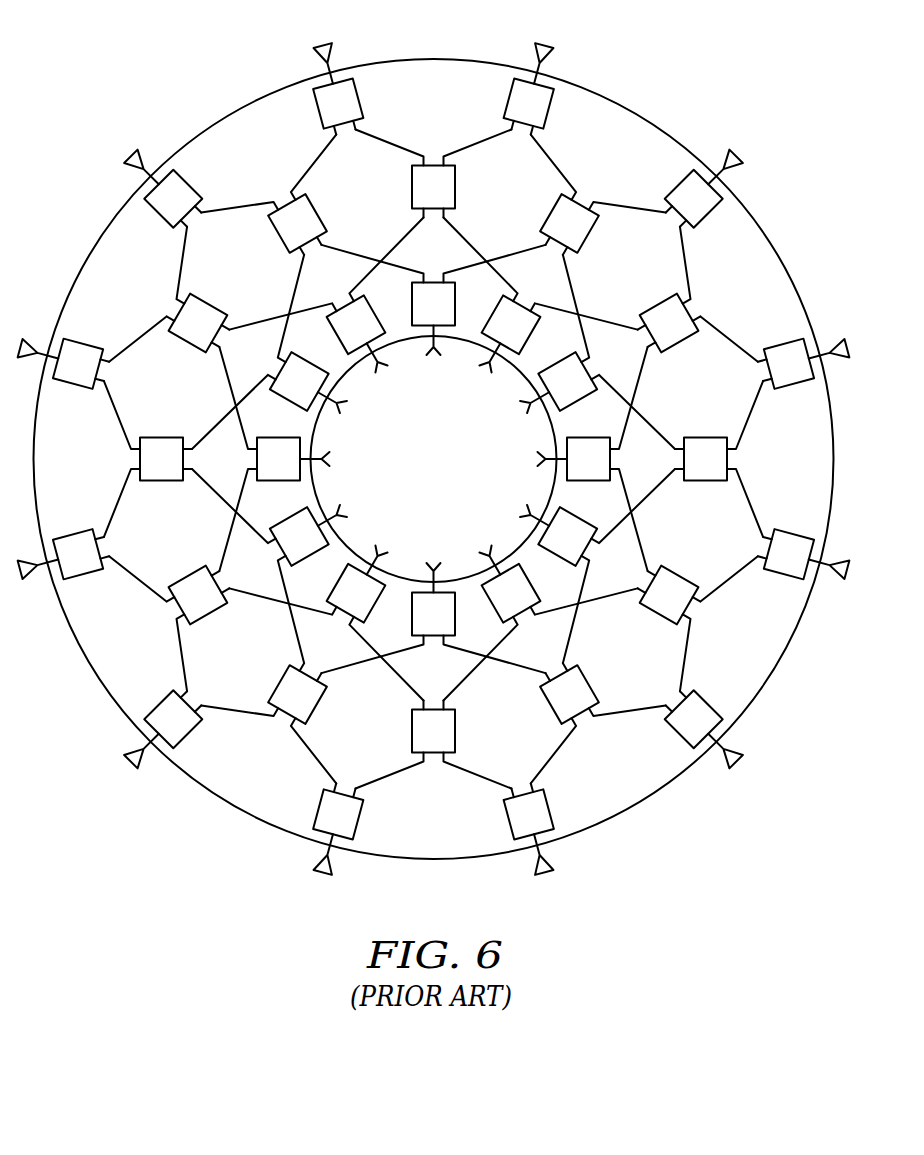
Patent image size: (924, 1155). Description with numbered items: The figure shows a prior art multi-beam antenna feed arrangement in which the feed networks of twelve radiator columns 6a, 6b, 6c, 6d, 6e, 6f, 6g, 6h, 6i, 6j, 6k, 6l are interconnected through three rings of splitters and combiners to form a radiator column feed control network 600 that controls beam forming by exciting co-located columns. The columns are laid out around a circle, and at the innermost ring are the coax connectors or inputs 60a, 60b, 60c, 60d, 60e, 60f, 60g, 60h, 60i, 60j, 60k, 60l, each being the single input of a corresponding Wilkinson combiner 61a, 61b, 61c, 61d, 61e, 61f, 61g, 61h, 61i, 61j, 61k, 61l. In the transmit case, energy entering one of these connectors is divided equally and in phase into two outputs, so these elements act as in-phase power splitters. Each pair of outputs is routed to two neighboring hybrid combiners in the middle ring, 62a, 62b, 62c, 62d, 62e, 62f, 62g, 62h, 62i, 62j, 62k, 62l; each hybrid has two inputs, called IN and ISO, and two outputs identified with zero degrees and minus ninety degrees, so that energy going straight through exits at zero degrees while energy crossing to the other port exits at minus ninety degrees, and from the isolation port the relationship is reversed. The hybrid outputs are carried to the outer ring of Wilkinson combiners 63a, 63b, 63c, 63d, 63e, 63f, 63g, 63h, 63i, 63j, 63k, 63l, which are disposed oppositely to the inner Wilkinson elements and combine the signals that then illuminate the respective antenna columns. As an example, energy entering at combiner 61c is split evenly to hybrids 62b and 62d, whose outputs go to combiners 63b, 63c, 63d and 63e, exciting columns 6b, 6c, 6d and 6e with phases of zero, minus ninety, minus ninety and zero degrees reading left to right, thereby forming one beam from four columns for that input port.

The radiator column feed control network 600 is at (665, 52).
The radiator column 6a is at (846, 582).
The radiator column 6b is at (846, 340).
The radiator column 6c is at (737, 157).
The radiator column 6d is at (545, 44).
The radiator column 6e is at (322, 44).
The radiator column 6f is at (130, 157).
The radiator column 6g is at (20, 347).
The radiator column 6h is at (20, 571).
The radiator column 6i is at (130, 762).
The radiator column 6j is at (322, 873).
The radiator column 6k is at (545, 873).
The radiator column 6l is at (737, 762).
The coax connector input 60a is at (540, 464).
The coax connector input 60b is at (527, 411).
The coax connector input 60c is at (482, 372).
The coax connector input 60d is at (433, 356).
The coax connector input 60e is at (383, 369).
The coax connector input 60f is at (338, 404).
The coax connector input 60g is at (333, 464).
The coax connector input 60h is at (339, 513).
The coax connector input 60i is at (381, 548).
The coax connector input 60j is at (433, 563).
The coax connector input 60k is at (483, 548).
The coax connector input 60l is at (529, 514).
The Wilkinson combiner 61a is at (612, 459).
The Wilkinson combiner 61b is at (590, 371).
The Wilkinson combiner 61c is at (532, 306).
The Wilkinson combiner 61d is at (445, 279).
The Wilkinson combiner 61e is at (350, 298).
The Wilkinson combiner 61f is at (281, 366).
The Wilkinson combiner 61g is at (254, 452).
The Wilkinson combiner 61h is at (279, 548).
The Wilkinson combiner 61i is at (334, 618).
The Wilkinson combiner 61j is at (419, 648).
The Wilkinson combiner 61k is at (521, 616).
The Wilkinson combiner 61l is at (588, 552).
The hybrid combiner 62a is at (730, 464).
The hybrid combiner 62b is at (691, 318).
The hybrid combiner 62c is at (580, 200).
The hybrid combiner 62d is at (430, 160).
The hybrid combiner 62e is at (288, 204).
The hybrid combiner 62f is at (181, 312).
The hybrid combiner 62g is at (142, 457).
The hybrid combiner 62h is at (181, 606).
The hybrid combiner 62i is at (289, 716).
The hybrid combiner 62j is at (432, 753).
The hybrid combiner 62k is at (581, 715).
The hybrid combiner 62l is at (690, 607).
The Wilkinson combiner 63a is at (790, 532).
The Wilkinson combiner 63b is at (790, 386).
The Wilkinson combiner 63c is at (708, 214).
The Wilkinson combiner 63d is at (549, 109).
The Wilkinson combiner 63e is at (319, 109).
The Wilkinson combiner 63f is at (159, 214).
The Wilkinson combiner 63g is at (80, 385).
The Wilkinson combiner 63h is at (80, 533).
The Wilkinson combiner 63i is at (158, 705).
The Wilkinson combiner 63j is at (319, 809).
The Wilkinson combiner 63k is at (549, 810).
The Wilkinson combiner 63l is at (708, 705).